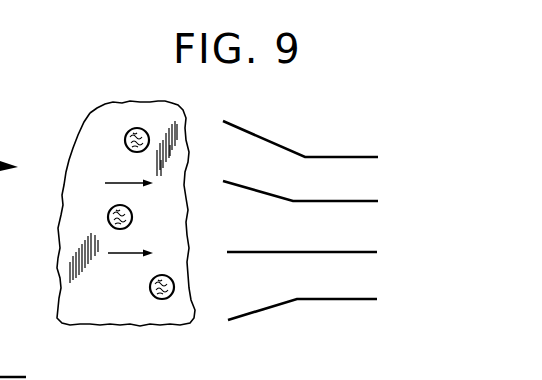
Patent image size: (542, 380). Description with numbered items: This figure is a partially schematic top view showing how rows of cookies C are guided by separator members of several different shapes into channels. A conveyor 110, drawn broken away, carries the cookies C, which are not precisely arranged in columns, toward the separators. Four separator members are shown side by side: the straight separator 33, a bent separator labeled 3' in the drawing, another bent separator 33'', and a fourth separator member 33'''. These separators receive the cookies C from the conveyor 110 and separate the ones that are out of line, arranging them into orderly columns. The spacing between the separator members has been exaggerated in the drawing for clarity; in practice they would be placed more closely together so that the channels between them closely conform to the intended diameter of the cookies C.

The conveyor 110 is at (118, 304).
The cookies C is at (140, 128).
The fourth separator member 33''' is at (300, 137).
The electrode 3' is at (300, 183).
The separator 33 is at (302, 234).
The bent separator 33'' is at (302, 319).